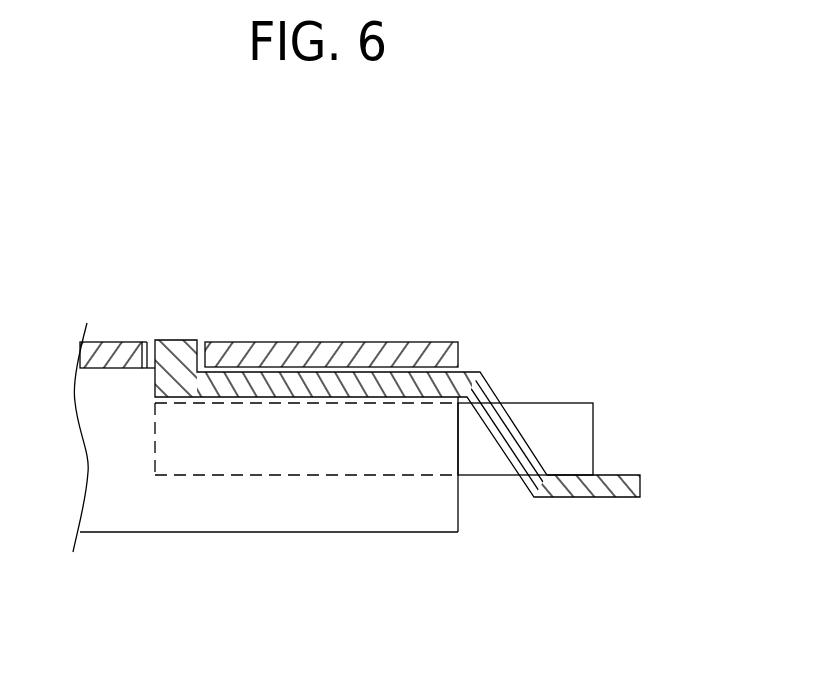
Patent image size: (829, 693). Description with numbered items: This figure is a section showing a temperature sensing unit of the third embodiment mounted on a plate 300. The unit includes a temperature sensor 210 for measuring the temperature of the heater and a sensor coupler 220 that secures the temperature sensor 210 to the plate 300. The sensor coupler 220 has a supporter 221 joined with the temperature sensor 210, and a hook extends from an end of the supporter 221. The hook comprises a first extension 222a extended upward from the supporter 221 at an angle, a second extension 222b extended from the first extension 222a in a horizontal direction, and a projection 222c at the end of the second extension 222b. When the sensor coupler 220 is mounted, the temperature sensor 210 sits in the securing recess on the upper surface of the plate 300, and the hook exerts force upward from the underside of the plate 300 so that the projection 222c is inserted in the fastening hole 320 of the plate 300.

The plate 300 is at (110, 342).
The fastening hole 320 is at (201, 348).
The projection 222c is at (182, 350).
The second extension 222b is at (370, 377).
The first extension 222a is at (517, 457).
The supporter 221 is at (640, 486).
The sensor coupler 220 is at (618, 500).
The temperature sensor 210 is at (562, 413).